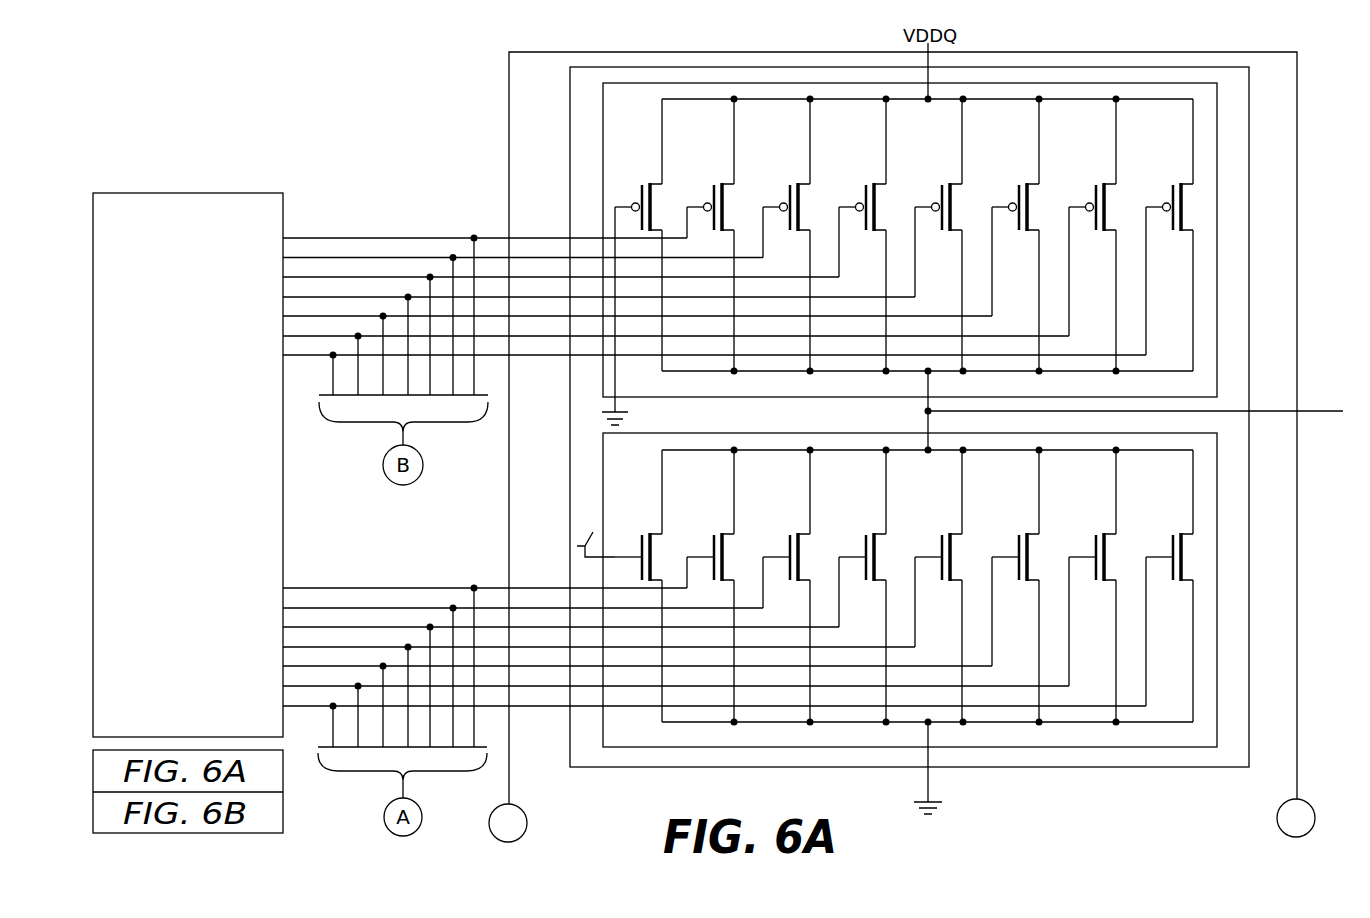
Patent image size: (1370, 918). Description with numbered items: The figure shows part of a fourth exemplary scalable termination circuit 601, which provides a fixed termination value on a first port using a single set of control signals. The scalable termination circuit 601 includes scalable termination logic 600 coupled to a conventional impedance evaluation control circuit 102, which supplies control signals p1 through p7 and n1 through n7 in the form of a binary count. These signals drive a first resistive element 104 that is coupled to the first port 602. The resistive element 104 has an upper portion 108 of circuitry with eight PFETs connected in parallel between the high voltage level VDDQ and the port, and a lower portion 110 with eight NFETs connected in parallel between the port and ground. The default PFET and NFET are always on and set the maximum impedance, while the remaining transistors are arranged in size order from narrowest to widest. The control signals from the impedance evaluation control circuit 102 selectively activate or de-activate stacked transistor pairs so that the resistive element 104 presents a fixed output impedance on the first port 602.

The impedance evaluation control circuit 102 is at (243, 194).
The resistive element 104 is at (567, 128).
The upper portion 108 is at (1217, 111).
The lower portion 110 is at (1217, 501).
The scalable termination logic 600 is at (508, 70).
The scalable termination circuit 601 is at (395, 82).
The first port 602 is at (1318, 411).